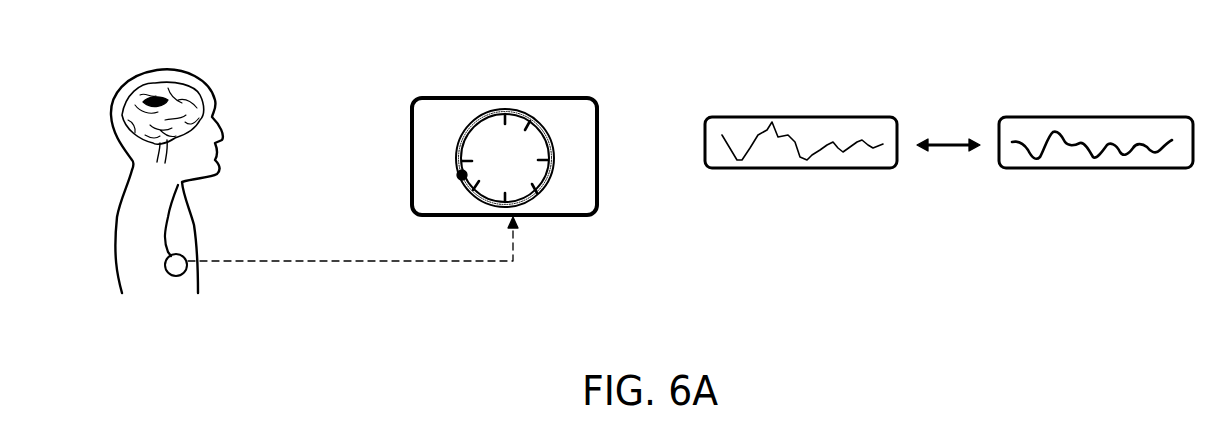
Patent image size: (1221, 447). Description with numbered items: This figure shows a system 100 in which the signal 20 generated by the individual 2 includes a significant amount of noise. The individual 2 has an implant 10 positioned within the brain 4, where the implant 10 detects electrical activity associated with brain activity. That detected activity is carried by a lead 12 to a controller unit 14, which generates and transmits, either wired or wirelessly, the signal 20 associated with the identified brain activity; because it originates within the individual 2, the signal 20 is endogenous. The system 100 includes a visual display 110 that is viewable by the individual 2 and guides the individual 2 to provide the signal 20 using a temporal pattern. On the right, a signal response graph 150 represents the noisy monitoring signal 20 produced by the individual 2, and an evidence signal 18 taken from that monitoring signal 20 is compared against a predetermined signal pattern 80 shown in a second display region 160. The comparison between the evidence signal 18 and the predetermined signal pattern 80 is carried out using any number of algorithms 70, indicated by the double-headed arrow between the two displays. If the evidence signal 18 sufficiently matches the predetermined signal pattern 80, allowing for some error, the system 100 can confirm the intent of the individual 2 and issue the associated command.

The individual 2 is at (111, 111).
The brain 4 is at (197, 103).
The implant 10 is at (162, 94).
The lead 12 is at (170, 195).
The controller unit 14 is at (182, 263).
The signal 20 is at (347, 262).
The system 100 is at (540, 44).
The visual display 110 is at (562, 220).
The evidence signal 18 is at (760, 135).
The signal response graph 150 is at (800, 174).
The algorithms 70 is at (943, 150).
The predetermined signal pattern 80 is at (1038, 140).
The second signal display 160 is at (1083, 174).